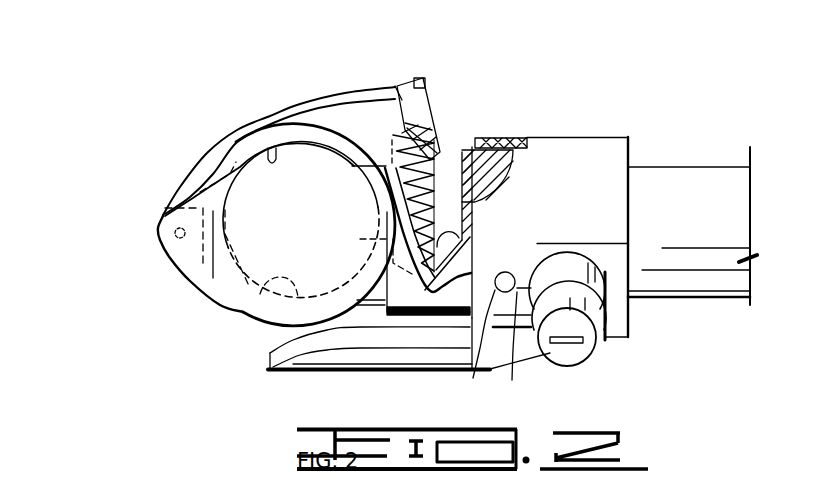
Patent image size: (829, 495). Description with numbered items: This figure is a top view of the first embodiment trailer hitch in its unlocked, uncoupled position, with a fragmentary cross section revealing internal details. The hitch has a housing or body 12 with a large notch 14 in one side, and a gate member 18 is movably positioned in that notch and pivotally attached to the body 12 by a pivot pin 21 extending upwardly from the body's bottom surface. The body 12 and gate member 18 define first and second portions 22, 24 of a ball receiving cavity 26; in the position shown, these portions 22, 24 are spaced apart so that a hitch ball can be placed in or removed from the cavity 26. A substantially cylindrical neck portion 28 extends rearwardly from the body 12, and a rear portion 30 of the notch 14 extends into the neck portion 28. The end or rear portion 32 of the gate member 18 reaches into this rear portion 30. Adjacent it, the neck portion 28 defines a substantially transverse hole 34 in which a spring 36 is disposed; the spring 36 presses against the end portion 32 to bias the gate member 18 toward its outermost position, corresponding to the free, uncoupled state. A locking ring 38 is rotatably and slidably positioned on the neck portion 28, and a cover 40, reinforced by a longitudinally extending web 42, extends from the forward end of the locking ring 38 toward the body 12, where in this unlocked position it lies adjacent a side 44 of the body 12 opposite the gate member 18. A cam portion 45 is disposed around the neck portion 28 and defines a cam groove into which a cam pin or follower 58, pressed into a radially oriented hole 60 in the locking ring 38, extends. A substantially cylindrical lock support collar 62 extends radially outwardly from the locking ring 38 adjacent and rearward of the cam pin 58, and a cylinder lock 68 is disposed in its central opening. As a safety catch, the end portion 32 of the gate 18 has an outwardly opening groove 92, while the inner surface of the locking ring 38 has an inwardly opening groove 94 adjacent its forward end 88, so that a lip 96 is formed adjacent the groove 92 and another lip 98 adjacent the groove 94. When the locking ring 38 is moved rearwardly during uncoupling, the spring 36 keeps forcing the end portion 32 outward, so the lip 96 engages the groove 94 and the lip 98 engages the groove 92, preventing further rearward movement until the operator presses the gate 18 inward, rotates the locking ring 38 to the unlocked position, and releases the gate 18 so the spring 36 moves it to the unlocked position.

The housing or body 12 is at (213, 277).
The large notch 14 is at (180, 183).
The gate member 18 is at (217, 143).
The pivot pin 21 is at (163, 220).
The first portion of ball receiving cavity 22 is at (263, 283).
The second portion of ball receiving cavity 24 is at (272, 150).
The ball receiving cavity 26 is at (301, 220).
The neck portion 28 is at (462, 184).
The rear portion of notch 30 is at (464, 181).
The end or rear portion of gate member 32 is at (382, 107).
The transverse hole 34 is at (447, 232).
The spring 36 is at (428, 197).
The locking ring 38 is at (590, 147).
The cover 40 is at (332, 357).
The longitudinally extending web 42 is at (607, 337).
The side of body 44 is at (263, 325).
The cam portion 45 is at (510, 157).
The cam pin or follower 58 is at (513, 378).
The radially oriented hole 60 is at (485, 370).
The lock support collar 62 is at (607, 284).
The cylinder lock 68 is at (571, 354).
The forward end of locking ring 88 is at (464, 148).
The outwardly opening groove 92 is at (407, 83).
The inwardly opening groove 94 is at (505, 150).
The lip 96 is at (420, 77).
The lip 98 is at (500, 168).